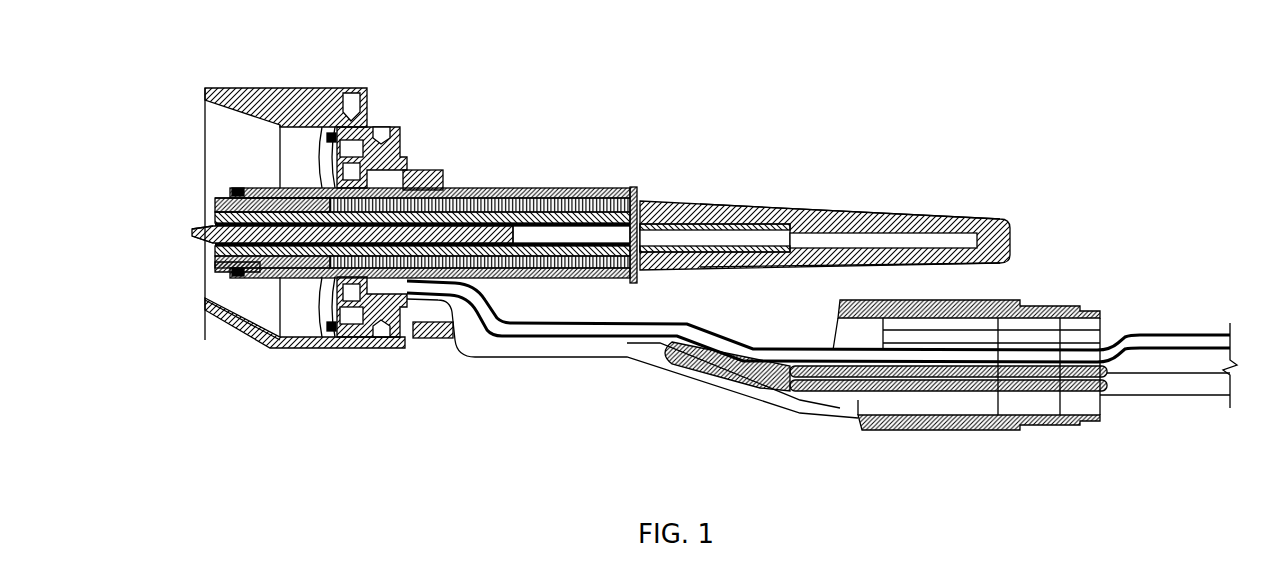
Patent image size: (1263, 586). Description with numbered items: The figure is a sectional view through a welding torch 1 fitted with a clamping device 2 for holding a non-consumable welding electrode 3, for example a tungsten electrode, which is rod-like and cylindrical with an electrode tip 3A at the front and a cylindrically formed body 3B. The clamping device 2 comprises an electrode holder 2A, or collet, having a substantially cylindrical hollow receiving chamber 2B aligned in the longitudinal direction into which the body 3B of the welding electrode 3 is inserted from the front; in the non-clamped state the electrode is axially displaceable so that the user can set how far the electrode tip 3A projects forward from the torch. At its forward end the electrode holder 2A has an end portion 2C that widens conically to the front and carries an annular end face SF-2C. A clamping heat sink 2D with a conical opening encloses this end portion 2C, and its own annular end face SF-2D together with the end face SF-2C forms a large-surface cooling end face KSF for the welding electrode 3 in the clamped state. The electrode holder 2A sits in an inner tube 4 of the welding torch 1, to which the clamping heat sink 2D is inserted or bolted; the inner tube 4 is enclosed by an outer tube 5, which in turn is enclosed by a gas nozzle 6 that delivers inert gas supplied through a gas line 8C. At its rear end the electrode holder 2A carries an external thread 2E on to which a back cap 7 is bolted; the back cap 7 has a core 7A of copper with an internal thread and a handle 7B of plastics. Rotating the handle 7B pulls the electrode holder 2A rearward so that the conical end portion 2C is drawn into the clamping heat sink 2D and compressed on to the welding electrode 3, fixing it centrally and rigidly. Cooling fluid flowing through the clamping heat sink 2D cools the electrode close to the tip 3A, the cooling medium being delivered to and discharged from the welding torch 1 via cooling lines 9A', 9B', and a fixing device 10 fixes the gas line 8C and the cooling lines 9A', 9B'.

The welding torch 1 is at (820, 116).
The clamping device 2 is at (373, 254).
The electrode holder 2A is at (565, 188).
The receiving chamber 2B is at (530, 245).
The end portion 2C is at (213, 218).
The clamping heat sink 2D is at (245, 278).
The thread 2E is at (645, 200).
The non-consumable welding electrode 3 is at (253, 190).
The electrode tip 3A is at (192, 229).
The body 3B is at (456, 342).
The inner tube 4 is at (534, 190).
The outer tube 5 is at (432, 170).
The gas nozzle 6 is at (300, 88).
The back cap 7 is at (825, 218).
The core 7A is at (709, 270).
The handle 7B is at (837, 265).
The gas line 8C is at (557, 340).
The cooling line 9A' is at (947, 407).
The cooling line 9B' is at (995, 387).
The fixing device 10 is at (957, 417).
The cooling end face KSF is at (208, 263).
The annular end face SF-2C is at (212, 212).
The annular end face SF-2D is at (212, 202).